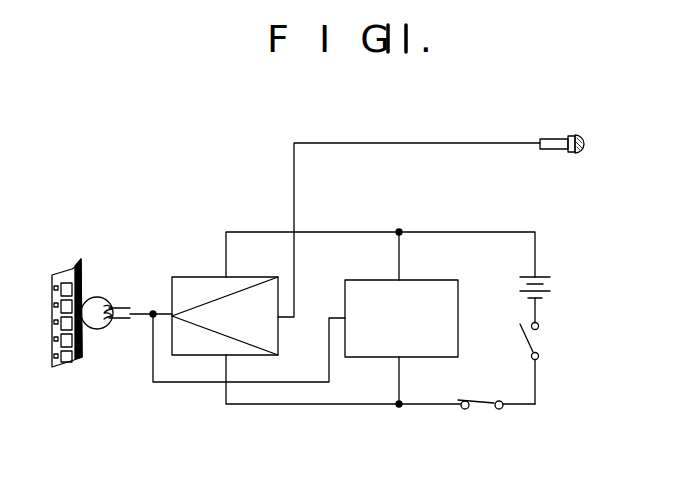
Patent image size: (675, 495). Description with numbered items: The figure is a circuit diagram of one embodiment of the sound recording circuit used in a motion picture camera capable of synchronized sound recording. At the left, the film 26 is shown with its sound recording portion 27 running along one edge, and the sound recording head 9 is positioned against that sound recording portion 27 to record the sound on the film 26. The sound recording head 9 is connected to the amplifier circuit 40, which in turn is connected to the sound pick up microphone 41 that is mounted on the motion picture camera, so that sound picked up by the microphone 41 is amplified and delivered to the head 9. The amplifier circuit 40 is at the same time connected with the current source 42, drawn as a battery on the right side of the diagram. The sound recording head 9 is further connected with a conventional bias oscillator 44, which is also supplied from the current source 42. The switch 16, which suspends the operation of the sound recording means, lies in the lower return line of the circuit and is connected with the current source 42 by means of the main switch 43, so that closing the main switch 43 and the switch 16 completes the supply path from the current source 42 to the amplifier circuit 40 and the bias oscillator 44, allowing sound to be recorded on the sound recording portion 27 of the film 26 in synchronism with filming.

The sound recording head 9 is at (103, 296).
The switch 16 is at (479, 398).
The film 26 is at (62, 366).
The sound recording portion 27 is at (83, 350).
The amplifier circuit 40 is at (187, 277).
The sound pick up microphone 41 is at (557, 137).
The current source 42 is at (553, 286).
The main switch 43 is at (538, 340).
The bias oscillator 44 is at (433, 285).